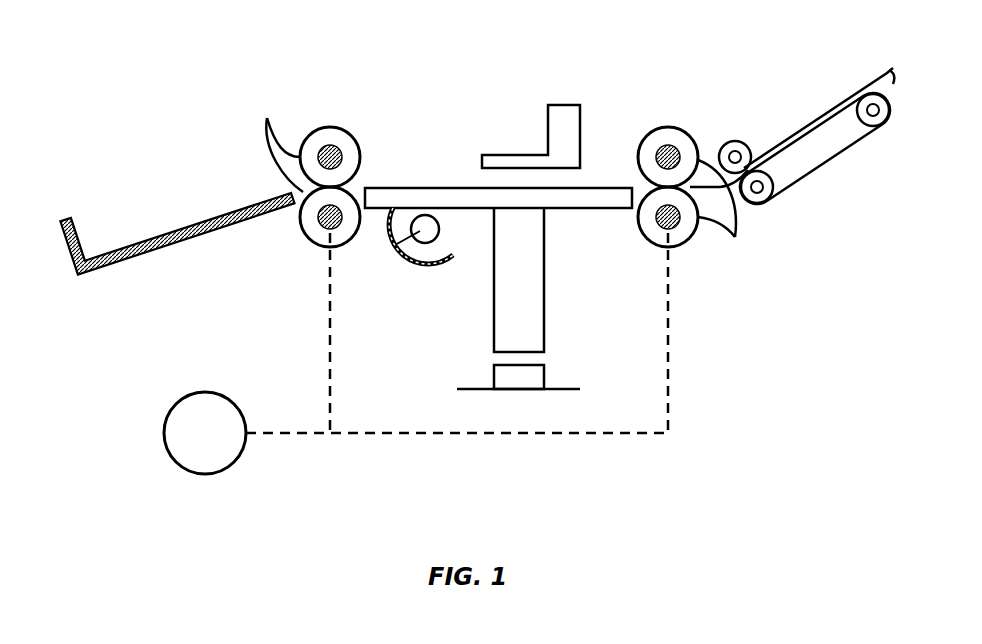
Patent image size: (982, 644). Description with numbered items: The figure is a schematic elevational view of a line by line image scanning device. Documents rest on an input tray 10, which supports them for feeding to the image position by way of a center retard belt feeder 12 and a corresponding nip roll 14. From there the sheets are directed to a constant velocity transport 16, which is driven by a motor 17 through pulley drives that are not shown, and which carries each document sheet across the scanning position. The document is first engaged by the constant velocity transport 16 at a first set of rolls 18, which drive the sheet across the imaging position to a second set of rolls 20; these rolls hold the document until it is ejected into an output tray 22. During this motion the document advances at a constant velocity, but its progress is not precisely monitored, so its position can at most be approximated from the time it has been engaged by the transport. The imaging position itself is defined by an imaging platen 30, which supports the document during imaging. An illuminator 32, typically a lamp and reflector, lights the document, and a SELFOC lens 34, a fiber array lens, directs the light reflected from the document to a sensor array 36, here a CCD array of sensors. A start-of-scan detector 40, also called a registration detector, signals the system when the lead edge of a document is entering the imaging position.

The input tray 10 is at (813, 124).
The center retard belt feeder 12 is at (822, 166).
The nip roll 14 is at (735, 141).
The constant velocity transport 16 is at (333, 108).
The motor 17 is at (205, 392).
The first set of rolls 18 is at (724, 215).
The second set of rolls 20 is at (278, 143).
The output tray 22 is at (182, 240).
The imaging platen 30 is at (570, 209).
The illuminator 32 is at (392, 248).
The SELFOC lens 34 is at (535, 280).
The sensor array 36 is at (520, 382).
The start-of-scan detector 40 is at (562, 104).